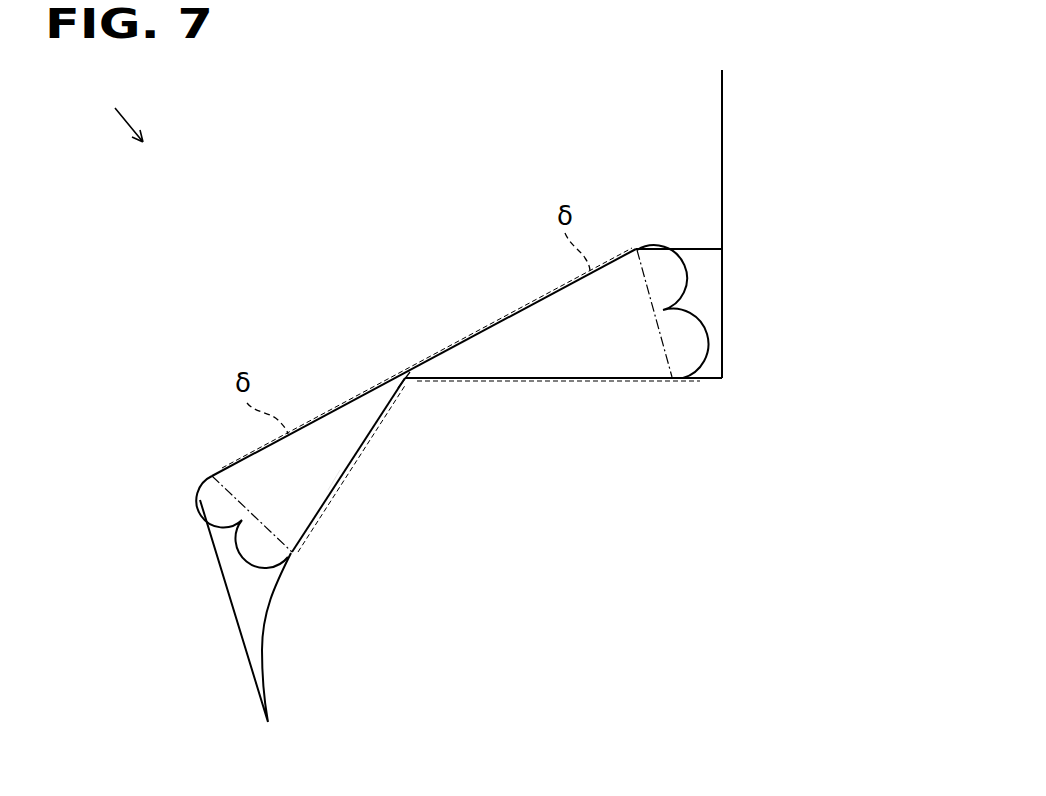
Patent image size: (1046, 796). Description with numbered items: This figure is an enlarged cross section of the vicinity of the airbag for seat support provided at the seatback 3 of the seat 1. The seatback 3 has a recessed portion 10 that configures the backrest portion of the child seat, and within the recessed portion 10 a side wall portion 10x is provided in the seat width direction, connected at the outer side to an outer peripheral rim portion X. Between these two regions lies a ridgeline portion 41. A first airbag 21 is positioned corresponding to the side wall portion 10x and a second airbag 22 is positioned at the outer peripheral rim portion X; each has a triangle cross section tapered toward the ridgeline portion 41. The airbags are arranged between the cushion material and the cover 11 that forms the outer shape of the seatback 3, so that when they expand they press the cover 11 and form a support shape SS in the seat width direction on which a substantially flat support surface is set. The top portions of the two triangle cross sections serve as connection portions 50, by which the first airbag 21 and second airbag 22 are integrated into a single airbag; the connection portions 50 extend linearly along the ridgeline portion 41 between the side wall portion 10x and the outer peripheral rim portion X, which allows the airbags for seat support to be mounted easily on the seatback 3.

The seat 1 is at (113, 105).
The recessed portion 10 is at (722, 172).
The side wall portion 10x is at (560, 392).
The first airbag 21 is at (692, 316).
The second airbag 22 is at (242, 556).
The cover 11 is at (242, 635).
The ridgeline portion 41 is at (394, 380).
The connection portion 50 is at (401, 377).
The seatback 3 is at (549, 544).
The support shape SS is at (457, 344).
The outer peripheral rim portion X is at (347, 488).